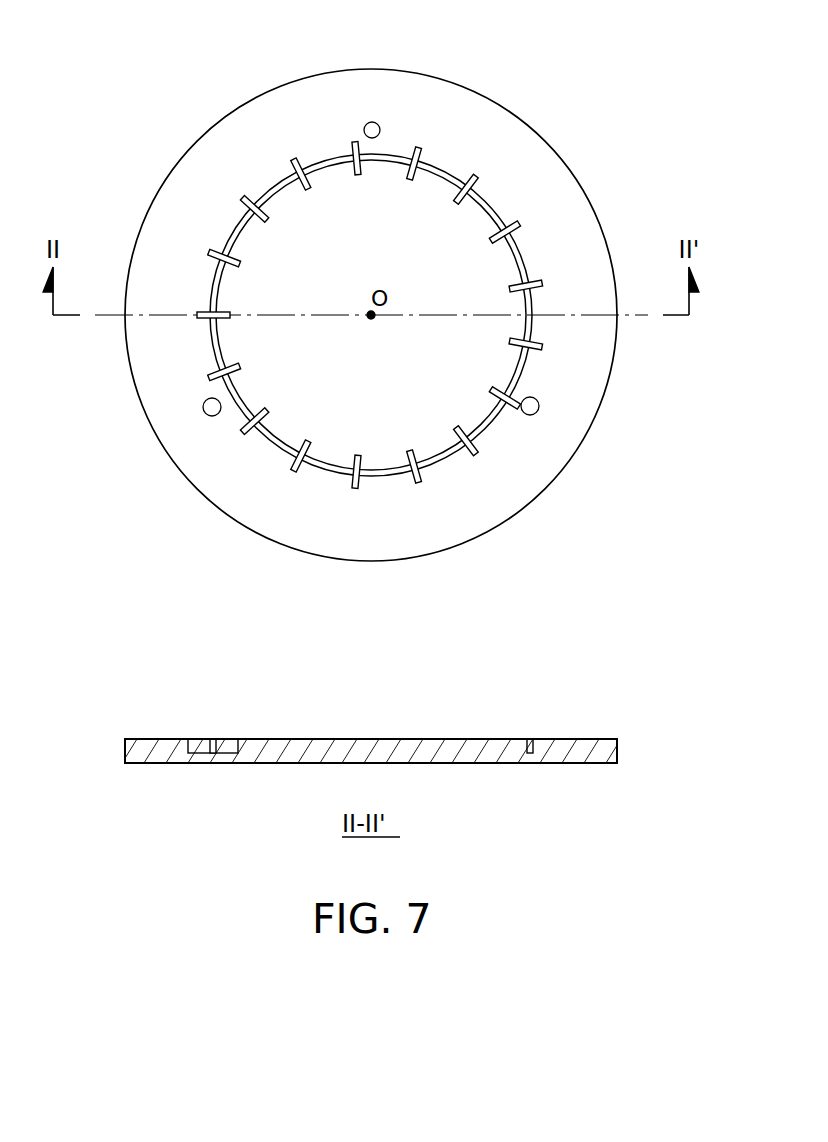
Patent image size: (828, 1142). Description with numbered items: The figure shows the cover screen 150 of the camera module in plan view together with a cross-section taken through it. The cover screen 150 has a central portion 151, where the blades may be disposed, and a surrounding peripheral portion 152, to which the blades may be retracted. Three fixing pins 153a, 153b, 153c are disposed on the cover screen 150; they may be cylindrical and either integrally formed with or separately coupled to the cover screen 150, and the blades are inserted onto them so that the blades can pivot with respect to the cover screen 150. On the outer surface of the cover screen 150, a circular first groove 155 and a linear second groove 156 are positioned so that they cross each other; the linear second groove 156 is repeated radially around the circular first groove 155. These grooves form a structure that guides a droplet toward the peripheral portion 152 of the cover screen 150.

The cover screen 150 is at (377, 383).
The central portion 151 is at (470, 405).
The peripheral portion 152 is at (438, 530).
The fixing pin 153a is at (203, 407).
The fixing pin 153b is at (539, 406).
The fixing pin 153c is at (372, 122).
The first groove 155 is at (448, 162).
The second groove 156 is at (512, 211).